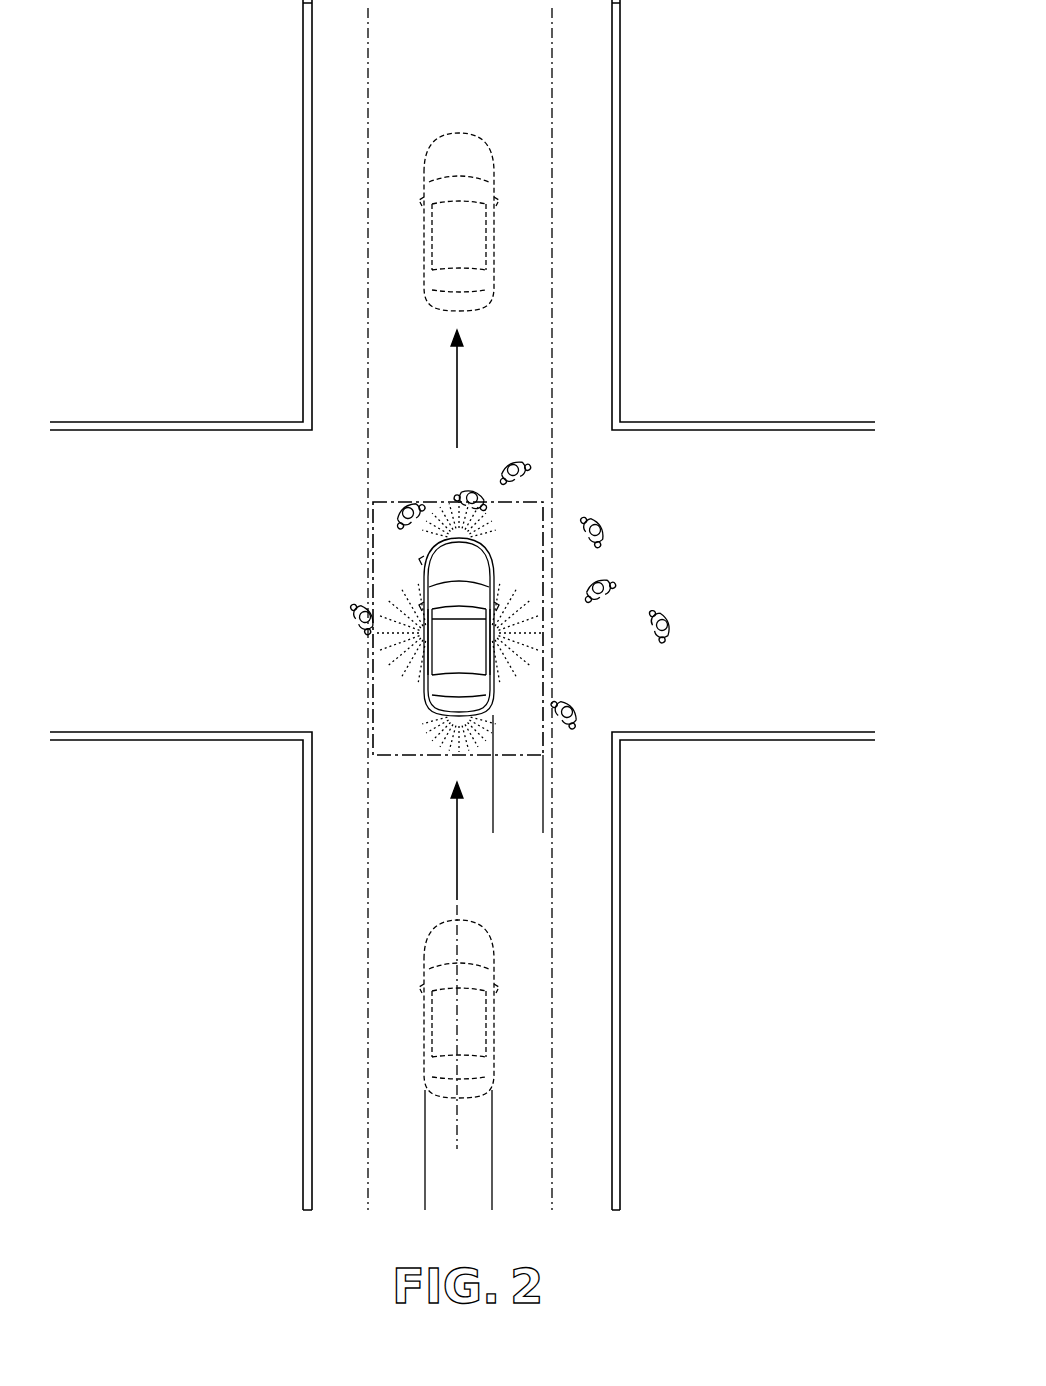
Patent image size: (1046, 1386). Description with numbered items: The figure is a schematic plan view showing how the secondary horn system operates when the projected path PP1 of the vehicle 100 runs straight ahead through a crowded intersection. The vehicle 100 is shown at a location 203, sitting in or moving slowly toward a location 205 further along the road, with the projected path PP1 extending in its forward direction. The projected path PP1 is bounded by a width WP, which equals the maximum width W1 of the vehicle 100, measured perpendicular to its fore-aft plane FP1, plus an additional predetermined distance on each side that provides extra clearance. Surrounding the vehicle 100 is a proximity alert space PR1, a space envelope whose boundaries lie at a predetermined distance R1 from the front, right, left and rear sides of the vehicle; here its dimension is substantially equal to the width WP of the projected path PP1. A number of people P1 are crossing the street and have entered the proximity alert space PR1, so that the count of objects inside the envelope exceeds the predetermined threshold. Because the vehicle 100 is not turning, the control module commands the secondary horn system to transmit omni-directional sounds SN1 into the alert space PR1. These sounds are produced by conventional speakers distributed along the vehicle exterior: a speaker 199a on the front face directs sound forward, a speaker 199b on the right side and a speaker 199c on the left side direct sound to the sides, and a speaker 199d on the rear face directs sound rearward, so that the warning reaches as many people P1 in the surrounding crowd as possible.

The vehicle 100 is at (472, 248).
The conventional speaker 199a is at (470, 527).
The conventional speaker 199b is at (491, 632).
The conventional speaker 199c is at (427, 632).
The conventional speaker 199d is at (449, 718).
The location 203 is at (463, 598).
The location 205 is at (427, 208).
The people P1 is at (400, 523).
The proximity alert space PR1 is at (385, 497).
The omni-directional sounds SN1 is at (427, 557).
The predetermined distance R1 is at (543, 800).
The width of the projected path WP is at (670, 112).
The maximum width of the vehicle W1 is at (252, 1189).
The fore-aft plane FP1 is at (457, 1129).
The projected path PP1 is at (368, 1111).